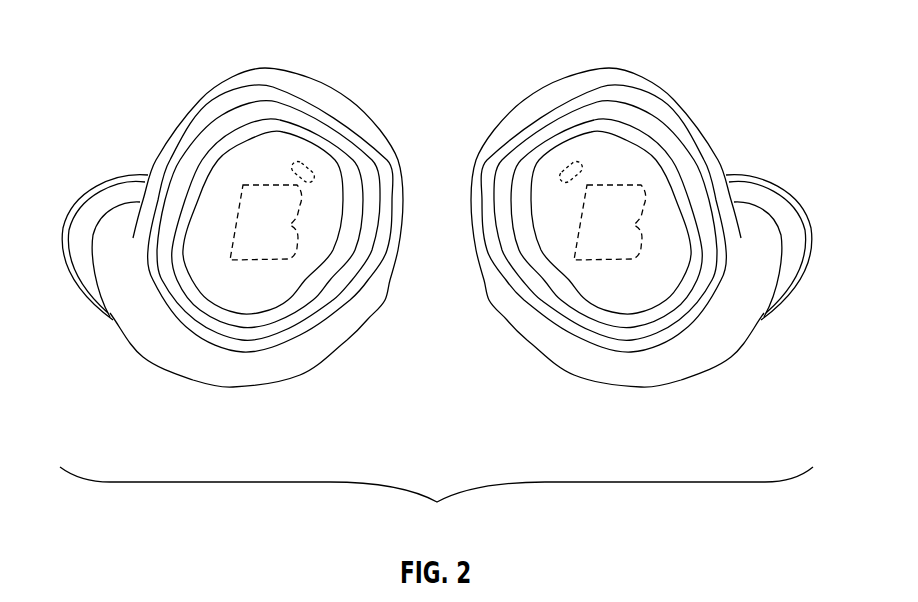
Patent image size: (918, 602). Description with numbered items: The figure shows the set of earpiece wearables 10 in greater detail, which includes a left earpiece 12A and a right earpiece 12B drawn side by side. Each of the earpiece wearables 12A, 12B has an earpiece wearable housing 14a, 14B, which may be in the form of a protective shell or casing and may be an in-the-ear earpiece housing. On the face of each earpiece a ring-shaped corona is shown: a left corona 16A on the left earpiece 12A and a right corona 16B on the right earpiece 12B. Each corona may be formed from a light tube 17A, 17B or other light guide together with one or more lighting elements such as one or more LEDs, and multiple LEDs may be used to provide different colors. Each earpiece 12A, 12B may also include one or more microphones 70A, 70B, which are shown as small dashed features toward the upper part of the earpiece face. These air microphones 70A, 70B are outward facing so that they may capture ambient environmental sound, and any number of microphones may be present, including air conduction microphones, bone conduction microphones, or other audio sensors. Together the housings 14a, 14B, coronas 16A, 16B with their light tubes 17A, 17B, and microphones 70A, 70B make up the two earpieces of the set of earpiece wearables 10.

The set of earpiece wearables 10 is at (436, 500).
The left earpiece 12A is at (243, 69).
The right earpiece 12B is at (621, 69).
The earpiece wearable housing 14a is at (293, 358).
The earpiece wearable housing 14B is at (700, 358).
The left corona 16A is at (204, 150).
The right corona 16B is at (667, 143).
The light tube 17A is at (349, 272).
The light tube 17B is at (560, 305).
The microphone 70A is at (307, 172).
The microphone 70B is at (565, 172).